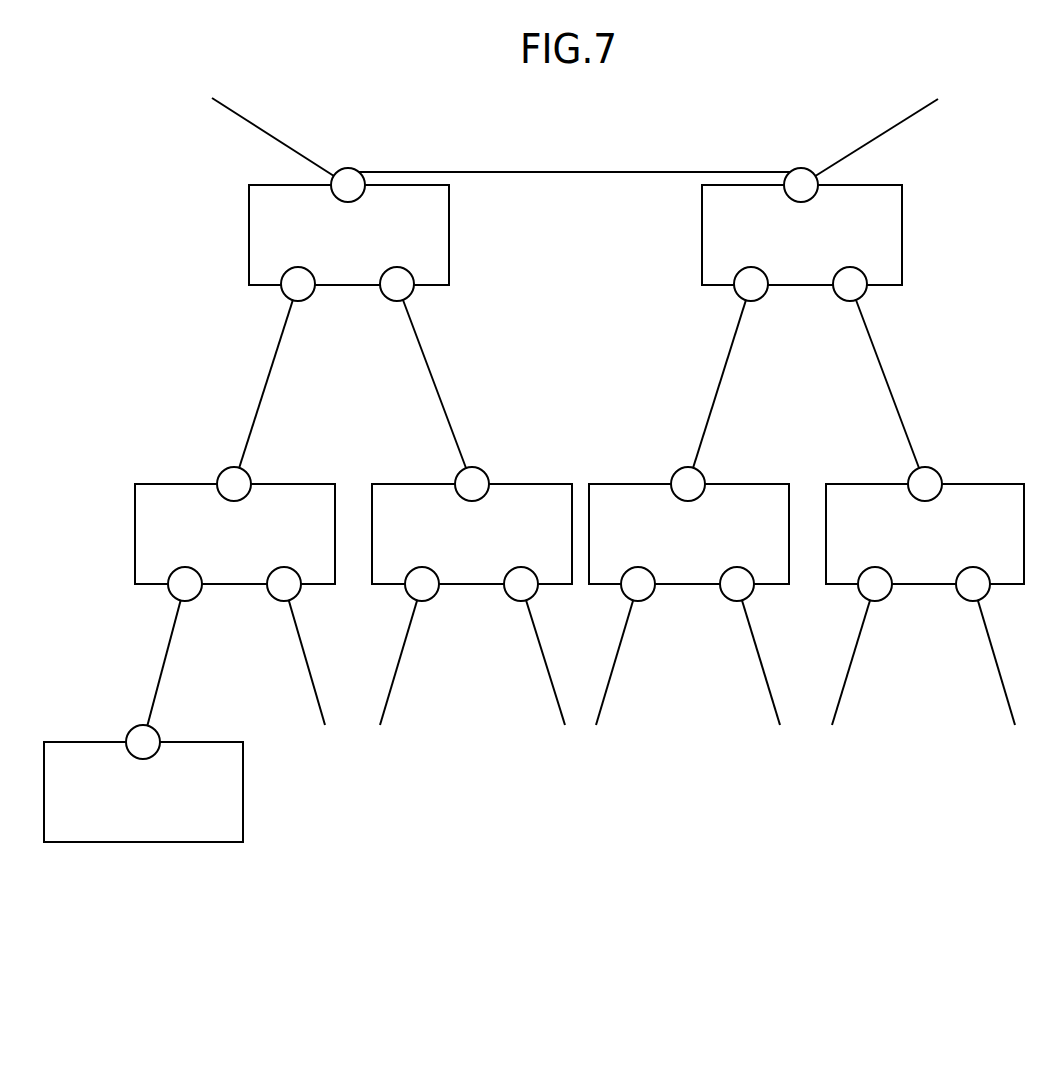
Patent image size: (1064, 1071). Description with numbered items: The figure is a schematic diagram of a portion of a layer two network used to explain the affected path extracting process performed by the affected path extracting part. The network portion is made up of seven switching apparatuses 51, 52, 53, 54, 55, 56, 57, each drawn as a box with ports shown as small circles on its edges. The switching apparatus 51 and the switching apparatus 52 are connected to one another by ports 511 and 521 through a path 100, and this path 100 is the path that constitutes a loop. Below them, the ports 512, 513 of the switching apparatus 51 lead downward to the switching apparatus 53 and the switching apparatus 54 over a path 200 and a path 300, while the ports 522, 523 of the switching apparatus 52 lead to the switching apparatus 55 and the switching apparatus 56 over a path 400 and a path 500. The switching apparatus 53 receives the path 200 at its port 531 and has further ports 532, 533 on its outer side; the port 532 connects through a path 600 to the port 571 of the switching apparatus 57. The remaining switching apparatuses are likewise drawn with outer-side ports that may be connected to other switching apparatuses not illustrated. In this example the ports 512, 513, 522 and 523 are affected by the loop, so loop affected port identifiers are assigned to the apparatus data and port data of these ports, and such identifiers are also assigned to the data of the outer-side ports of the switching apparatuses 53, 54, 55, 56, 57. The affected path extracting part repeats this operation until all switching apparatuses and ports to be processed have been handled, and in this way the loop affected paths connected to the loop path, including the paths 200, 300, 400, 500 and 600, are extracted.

The switching apparatus 51 is at (253, 185).
The switching apparatus 52 is at (843, 185).
The switching apparatus 53 is at (145, 484).
The switching apparatus 54 is at (383, 484).
The switching apparatus 55 is at (599, 484).
The switching apparatus 56 is at (836, 484).
The switching apparatus 57 is at (65, 742).
The port 511 is at (340, 171).
The port 512 is at (308, 297).
The port 513 is at (407, 297).
The port 521 is at (794, 170).
The port 522 is at (762, 297).
The port 523 is at (860, 297).
The port 531 is at (244, 470).
The port 532 is at (195, 597).
The port 533 is at (294, 597).
The port 571 is at (153, 729).
The path 100 is at (565, 172).
The path 200 is at (267, 382).
The path 300 is at (435, 380).
The path 400 is at (720, 383).
The path 500 is at (888, 380).
The path 600 is at (163, 665).